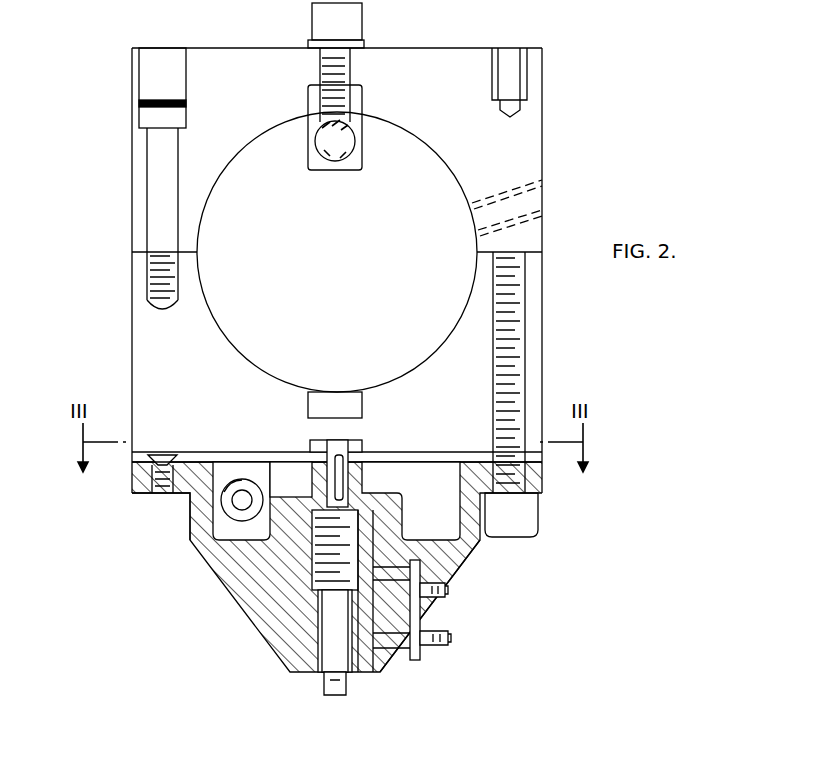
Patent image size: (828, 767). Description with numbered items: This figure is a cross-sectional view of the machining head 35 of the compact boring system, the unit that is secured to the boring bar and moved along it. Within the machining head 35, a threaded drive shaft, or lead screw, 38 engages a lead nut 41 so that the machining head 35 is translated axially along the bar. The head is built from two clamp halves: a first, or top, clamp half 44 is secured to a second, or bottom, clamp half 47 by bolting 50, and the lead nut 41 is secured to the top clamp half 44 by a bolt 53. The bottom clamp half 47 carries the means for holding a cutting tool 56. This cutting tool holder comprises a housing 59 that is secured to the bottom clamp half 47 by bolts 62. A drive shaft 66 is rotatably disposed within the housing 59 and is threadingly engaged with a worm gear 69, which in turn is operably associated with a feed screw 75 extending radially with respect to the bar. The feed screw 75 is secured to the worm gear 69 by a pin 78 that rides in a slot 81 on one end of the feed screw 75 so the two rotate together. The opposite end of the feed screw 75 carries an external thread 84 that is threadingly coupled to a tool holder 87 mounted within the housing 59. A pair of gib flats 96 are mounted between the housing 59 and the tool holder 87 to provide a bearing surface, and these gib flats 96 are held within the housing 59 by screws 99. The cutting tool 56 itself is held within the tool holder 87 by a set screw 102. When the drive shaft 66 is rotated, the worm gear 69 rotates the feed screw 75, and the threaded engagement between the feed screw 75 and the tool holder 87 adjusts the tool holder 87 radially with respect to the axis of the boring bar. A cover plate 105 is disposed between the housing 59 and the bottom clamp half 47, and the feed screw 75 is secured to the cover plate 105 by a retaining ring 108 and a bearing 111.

The machining head 35 is at (546, 124).
The threaded drive shaft 38 is at (345, 145).
The lead nut 41 is at (362, 100).
The top clamp half 44 is at (268, 48).
The bottom clamp half 47 is at (132, 302).
The bolting 50 is at (145, 110).
The bolt 53 is at (355, 28).
The cutting tool 56 is at (336, 690).
The housing 59 is at (132, 480).
The bolts 62 is at (525, 520).
The drive shaft 66 is at (228, 496).
The worm gear 69 is at (400, 496).
The feed screw 75 is at (322, 558).
The pin 78 is at (322, 446).
The slot 81 is at (320, 475).
The external thread 84 is at (452, 560).
The tool holder 87 is at (292, 672).
The gib flats 96 is at (382, 672).
The screws 99 is at (450, 640).
The set screw 102 is at (318, 620).
The cover plate 105 is at (225, 452).
The retaining ring 108 is at (362, 445).
The bearing 111 is at (348, 462).